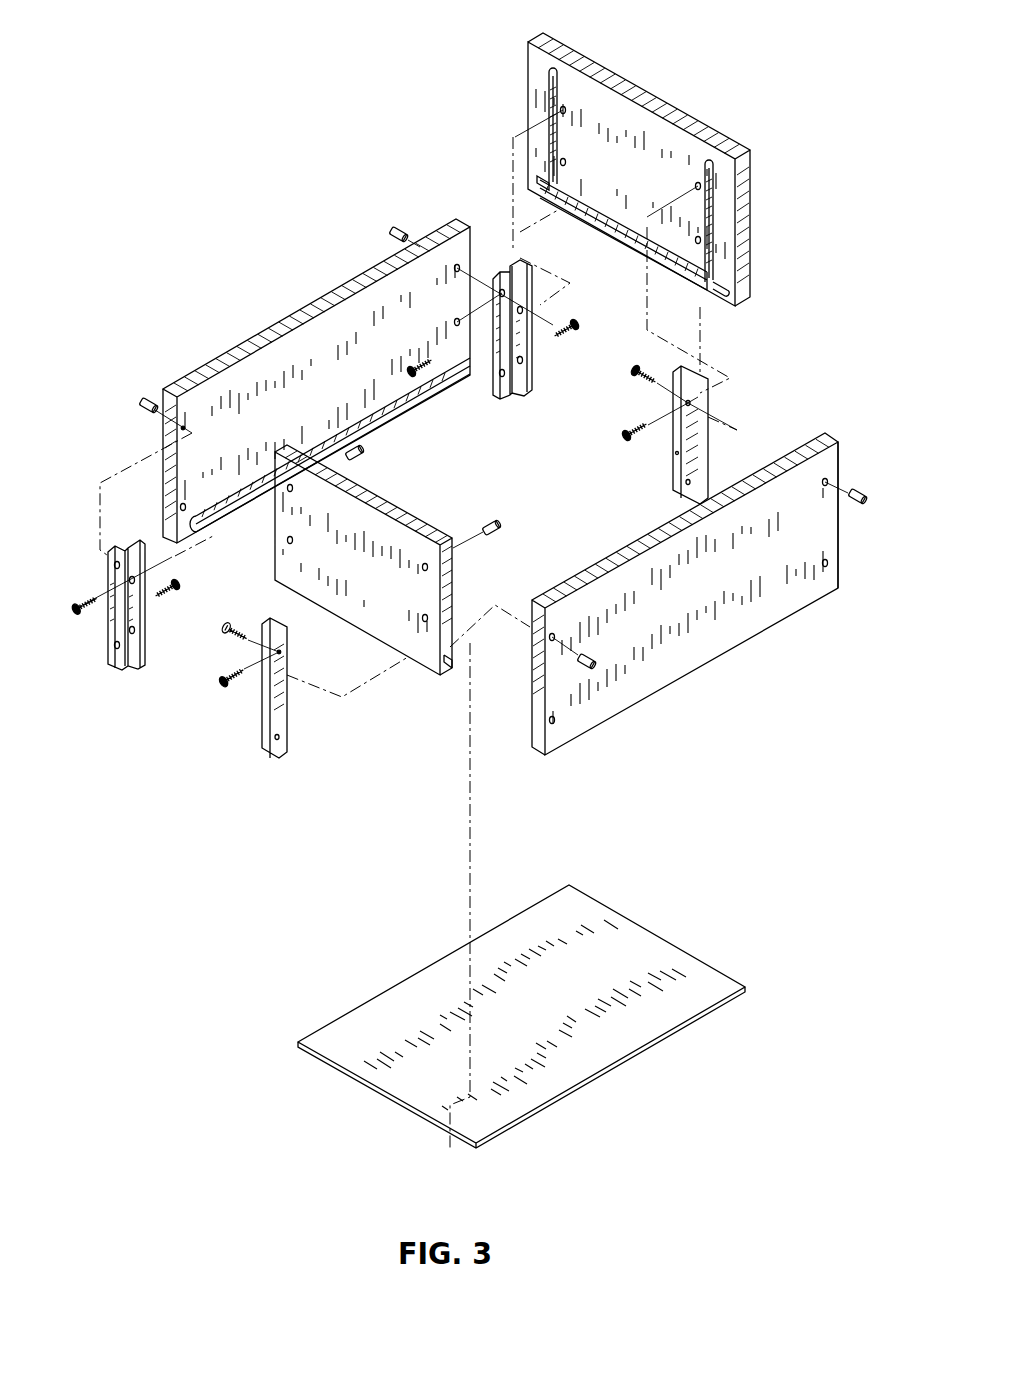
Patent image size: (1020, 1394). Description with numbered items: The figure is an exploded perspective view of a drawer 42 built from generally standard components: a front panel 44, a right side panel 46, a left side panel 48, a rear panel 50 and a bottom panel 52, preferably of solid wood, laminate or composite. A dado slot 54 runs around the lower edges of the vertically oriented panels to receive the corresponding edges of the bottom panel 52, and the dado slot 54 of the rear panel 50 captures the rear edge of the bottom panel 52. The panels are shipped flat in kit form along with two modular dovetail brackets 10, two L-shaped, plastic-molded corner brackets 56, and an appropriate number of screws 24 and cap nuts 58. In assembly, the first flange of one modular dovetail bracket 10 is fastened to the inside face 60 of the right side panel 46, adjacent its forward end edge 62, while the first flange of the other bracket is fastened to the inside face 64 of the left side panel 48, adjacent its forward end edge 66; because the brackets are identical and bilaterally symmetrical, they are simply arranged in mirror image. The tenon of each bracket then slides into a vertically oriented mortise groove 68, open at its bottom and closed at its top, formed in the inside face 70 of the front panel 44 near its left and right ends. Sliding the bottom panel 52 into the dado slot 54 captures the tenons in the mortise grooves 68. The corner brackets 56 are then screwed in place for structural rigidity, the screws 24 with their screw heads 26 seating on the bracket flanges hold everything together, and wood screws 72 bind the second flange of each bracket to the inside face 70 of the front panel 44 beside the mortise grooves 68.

The drawer 42 is at (242, 147).
The front panel 44 is at (770, 240).
The right side panel 46 is at (192, 350).
The left side panel 48 is at (640, 722).
The rear panel 50 is at (423, 690).
The bottom panel 52 is at (660, 963).
The dado slot 54 is at (592, 208).
The L-shaped corner bracket 56 is at (133, 662).
The cap nut 58 is at (142, 408).
The inside face of right side panel 60 is at (297, 345).
The forward end edge of right side panel 62 is at (463, 222).
The inside face of left side panel 64 is at (600, 557).
The forward end edge of left side panel 66 is at (842, 456).
The mortise groove 68 is at (548, 88).
The inside face of front panel 70 is at (632, 125).
The wood screw 72 is at (412, 366).
The modular dovetail bracket 10 is at (532, 393).
The screw 24 is at (230, 668).
The screw head 26 is at (222, 690).